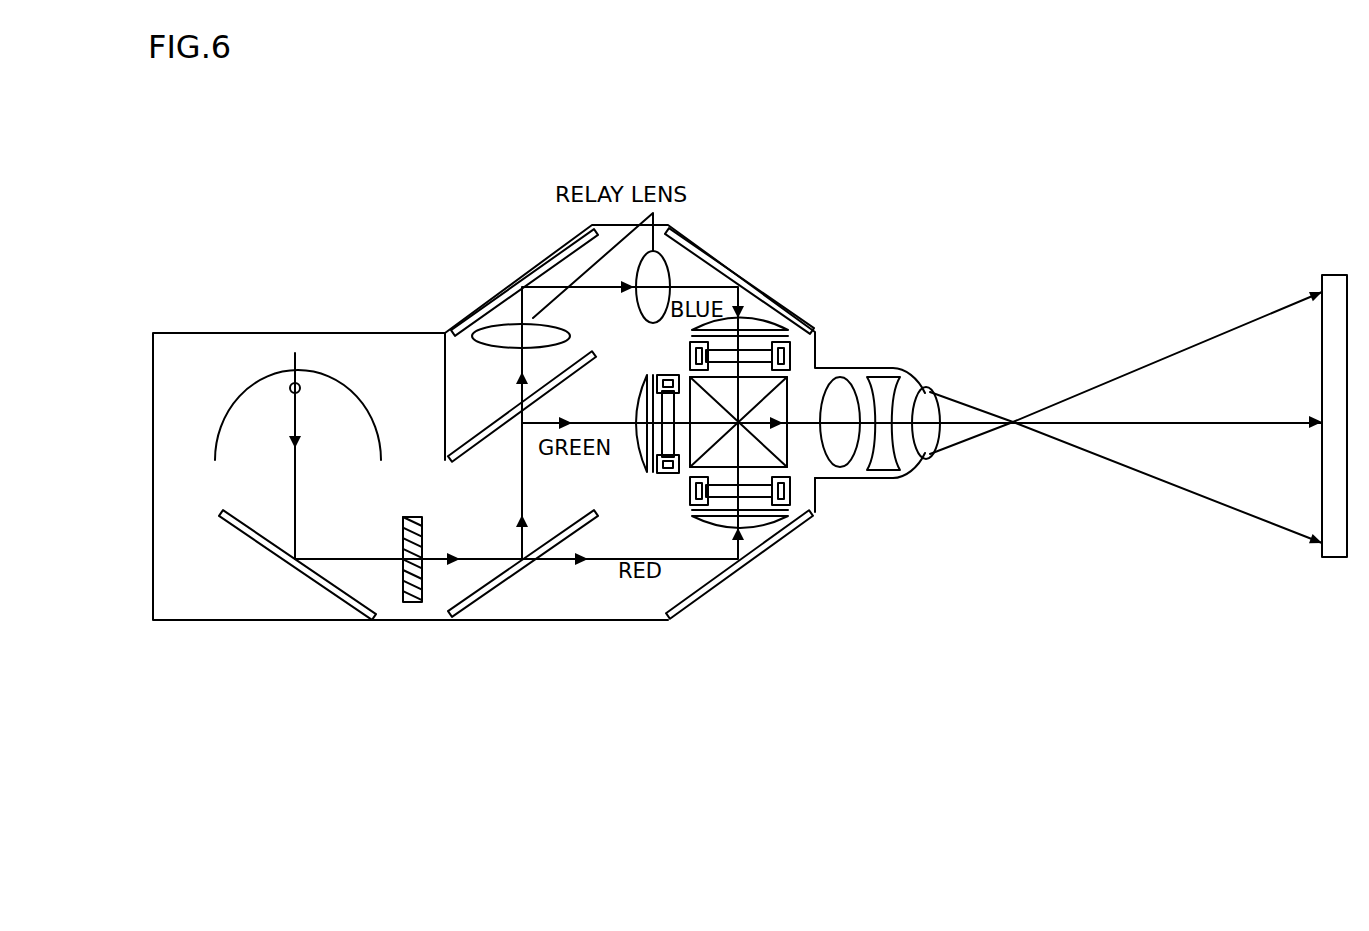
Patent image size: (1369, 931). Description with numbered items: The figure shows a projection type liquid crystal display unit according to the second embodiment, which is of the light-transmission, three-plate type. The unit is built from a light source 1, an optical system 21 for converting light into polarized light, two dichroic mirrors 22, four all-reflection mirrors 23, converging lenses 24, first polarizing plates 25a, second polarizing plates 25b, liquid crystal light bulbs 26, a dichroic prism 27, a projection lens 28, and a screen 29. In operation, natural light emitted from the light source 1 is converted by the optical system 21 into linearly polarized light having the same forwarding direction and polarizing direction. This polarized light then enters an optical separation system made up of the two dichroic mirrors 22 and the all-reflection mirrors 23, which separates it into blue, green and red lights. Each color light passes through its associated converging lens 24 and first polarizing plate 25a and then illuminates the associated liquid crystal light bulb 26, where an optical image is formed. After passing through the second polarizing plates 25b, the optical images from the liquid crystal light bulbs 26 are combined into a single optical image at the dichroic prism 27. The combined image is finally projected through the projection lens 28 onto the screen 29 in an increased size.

The light source 1 is at (367, 408).
The optical system for converting a light into a polarized light 21 is at (412, 604).
The dichroic mirror 22 is at (473, 443).
The all-reflection mirror 23 is at (297, 572).
The converging lens 24 is at (798, 518).
The first polarizing plate 25a is at (790, 352).
The second polarizing plate 25b is at (792, 490).
The liquid crystal light bulb 26 is at (800, 510).
The dichroic prism 27 is at (697, 452).
The projection lens 28 is at (923, 382).
The screen 29 is at (1335, 530).